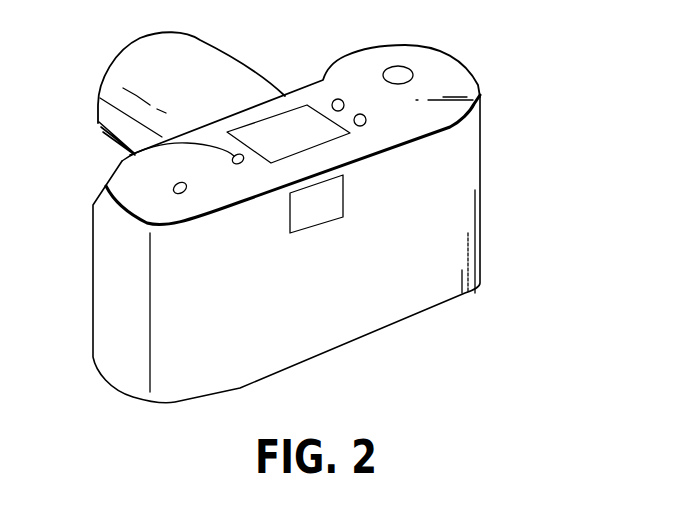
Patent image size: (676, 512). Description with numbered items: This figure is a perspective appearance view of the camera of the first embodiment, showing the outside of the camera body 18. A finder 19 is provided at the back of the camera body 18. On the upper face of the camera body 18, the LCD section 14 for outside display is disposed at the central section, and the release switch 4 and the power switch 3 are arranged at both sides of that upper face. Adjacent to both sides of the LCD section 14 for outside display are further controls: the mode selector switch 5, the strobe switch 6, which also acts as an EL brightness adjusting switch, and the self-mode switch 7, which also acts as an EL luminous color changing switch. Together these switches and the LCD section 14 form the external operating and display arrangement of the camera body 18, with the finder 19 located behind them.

The power switch 3 is at (173, 190).
The release switch 4 is at (397, 72).
The mode selector switch 5 is at (130, 153).
The strobe switch 6 is at (338, 99).
The self-mode switch 7 is at (363, 126).
The LCD section for outside display 14 is at (273, 127).
The camera body 18 is at (445, 181).
The finder 19 is at (305, 213).